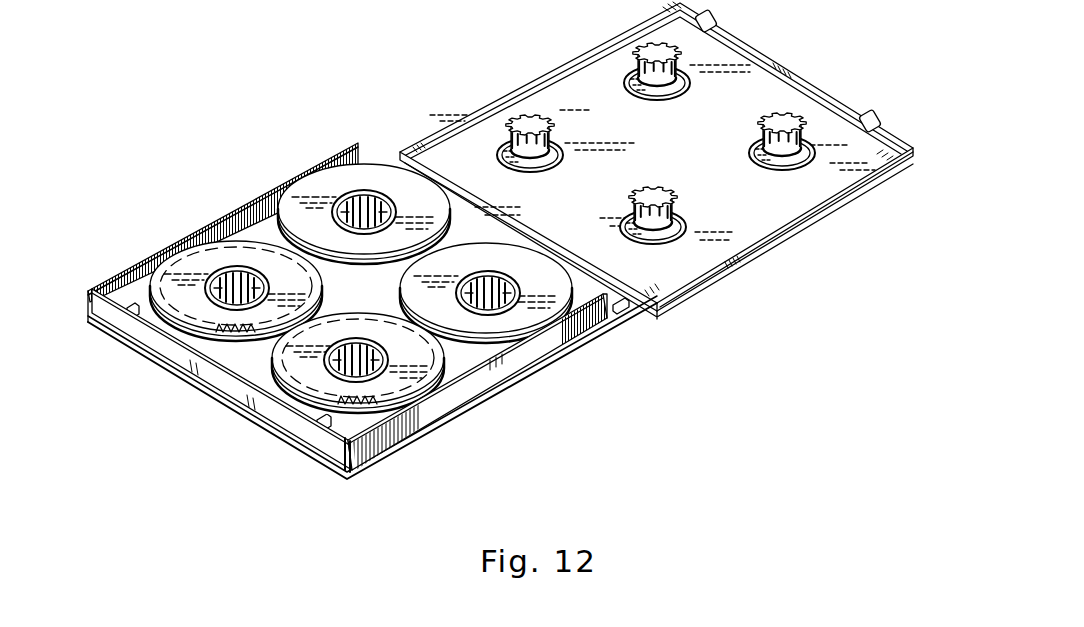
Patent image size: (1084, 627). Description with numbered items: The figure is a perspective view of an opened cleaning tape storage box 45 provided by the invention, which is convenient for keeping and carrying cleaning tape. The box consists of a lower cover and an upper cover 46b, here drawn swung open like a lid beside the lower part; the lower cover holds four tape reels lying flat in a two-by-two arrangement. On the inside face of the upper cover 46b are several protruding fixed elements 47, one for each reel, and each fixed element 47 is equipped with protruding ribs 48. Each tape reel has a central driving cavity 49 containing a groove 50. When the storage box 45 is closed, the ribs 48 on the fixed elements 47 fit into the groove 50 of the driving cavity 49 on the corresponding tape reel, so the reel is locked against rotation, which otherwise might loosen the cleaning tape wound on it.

The cleaning tape storage box 45 is at (372, 311).
The upper casing part (lid) 46b is at (795, 227).
The protruding fixed element 47 is at (535, 118).
The protruding rib 48 is at (513, 123).
The driving cavity 49 is at (375, 198).
The groove 50 is at (338, 198).